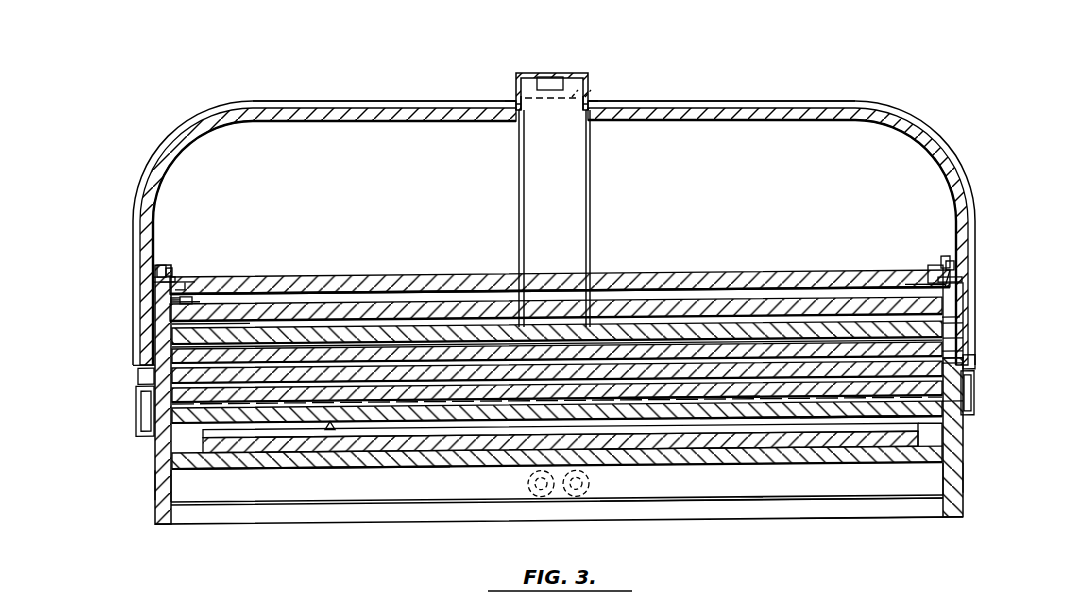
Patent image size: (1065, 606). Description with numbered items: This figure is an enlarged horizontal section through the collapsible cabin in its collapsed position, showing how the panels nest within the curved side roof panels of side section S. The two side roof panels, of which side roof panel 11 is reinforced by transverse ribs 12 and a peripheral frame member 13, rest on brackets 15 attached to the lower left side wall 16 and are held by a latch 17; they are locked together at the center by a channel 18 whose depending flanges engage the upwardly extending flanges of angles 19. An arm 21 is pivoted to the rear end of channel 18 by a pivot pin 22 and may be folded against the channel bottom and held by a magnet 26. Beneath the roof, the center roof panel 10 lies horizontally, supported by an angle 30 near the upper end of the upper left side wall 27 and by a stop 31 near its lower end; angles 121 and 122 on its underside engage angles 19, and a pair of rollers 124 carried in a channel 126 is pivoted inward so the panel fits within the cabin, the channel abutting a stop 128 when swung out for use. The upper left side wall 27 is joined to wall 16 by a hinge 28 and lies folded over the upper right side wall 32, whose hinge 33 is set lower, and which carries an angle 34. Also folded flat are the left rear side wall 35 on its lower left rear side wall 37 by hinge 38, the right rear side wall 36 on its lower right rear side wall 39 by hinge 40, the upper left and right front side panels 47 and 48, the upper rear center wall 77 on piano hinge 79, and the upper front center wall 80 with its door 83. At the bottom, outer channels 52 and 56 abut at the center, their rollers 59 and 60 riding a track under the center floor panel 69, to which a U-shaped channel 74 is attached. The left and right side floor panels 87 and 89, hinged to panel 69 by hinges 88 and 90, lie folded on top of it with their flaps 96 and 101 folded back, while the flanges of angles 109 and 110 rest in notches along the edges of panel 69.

The center roof panel 10 is at (742, 276).
The side roof panel 11 is at (188, 145).
The transverse ribs 12 is at (272, 108).
The peripheral frame member 13 is at (150, 376).
The brackets 15 is at (141, 421).
The lower left side wall 16 is at (153, 455).
The latch 17 is at (140, 401).
The channel 18 is at (580, 72).
The angle 19 is at (526, 110).
The arm 21 is at (586, 214).
The pivot pin 22 is at (592, 75).
The magnet 26 is at (549, 77).
The upper left side wall 27 is at (338, 301).
The hinge 28 is at (175, 307).
The angle 30 is at (908, 291).
The stop 31 is at (205, 313).
The upper right side wall 32 is at (636, 326).
The hinge 33 is at (948, 328).
The angle 34 is at (232, 334).
The left rear side wall 35 is at (176, 338).
The right rear side wall 36 is at (943, 351).
The lower left rear side wall 37 is at (432, 354).
The hinge 38 is at (172, 366).
The lower right rear side wall 39 is at (943, 362).
The hinge 40 is at (962, 358).
The upper left front side panel 47 is at (150, 385).
The upper right front side panel 48 is at (943, 372).
The outer channel 52 is at (322, 503).
The outer channel 56 is at (775, 496).
The roller 59 is at (527, 485).
The roller 60 is at (590, 485).
The center floor panel 69 is at (355, 470).
The U-shaped channel 74 is at (897, 507).
The upper rear center wall 77 is at (941, 393).
The piano hinge 79 is at (690, 399).
The upper front center wall 80 is at (961, 419).
The door 83 is at (780, 416).
The left side floor panel 87 is at (428, 462).
The hinge 88 is at (158, 466).
The right side floor panel 89 is at (738, 453).
The hinge 90 is at (937, 443).
The flap 96 is at (265, 471).
The flap 101 is at (906, 441).
The angle 109 is at (176, 485).
The angle 110 is at (932, 486).
The angle 121 is at (181, 285).
The angle 122 is at (934, 266).
The rollers 124 is at (158, 273).
The channel 126 is at (160, 265).
The stop 128 is at (175, 278).
The side section S is at (154, 492).